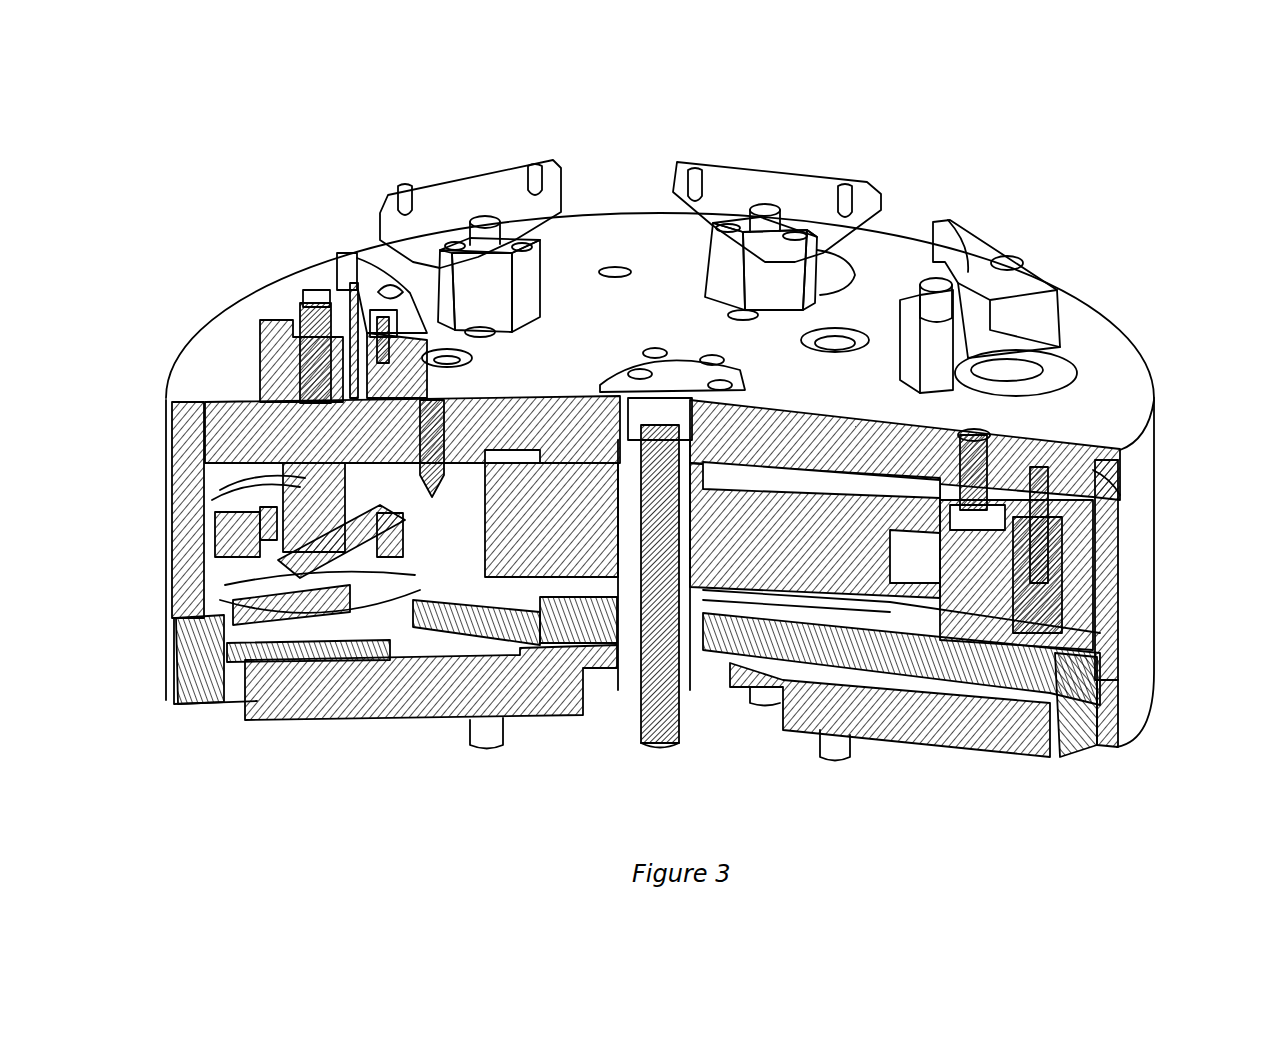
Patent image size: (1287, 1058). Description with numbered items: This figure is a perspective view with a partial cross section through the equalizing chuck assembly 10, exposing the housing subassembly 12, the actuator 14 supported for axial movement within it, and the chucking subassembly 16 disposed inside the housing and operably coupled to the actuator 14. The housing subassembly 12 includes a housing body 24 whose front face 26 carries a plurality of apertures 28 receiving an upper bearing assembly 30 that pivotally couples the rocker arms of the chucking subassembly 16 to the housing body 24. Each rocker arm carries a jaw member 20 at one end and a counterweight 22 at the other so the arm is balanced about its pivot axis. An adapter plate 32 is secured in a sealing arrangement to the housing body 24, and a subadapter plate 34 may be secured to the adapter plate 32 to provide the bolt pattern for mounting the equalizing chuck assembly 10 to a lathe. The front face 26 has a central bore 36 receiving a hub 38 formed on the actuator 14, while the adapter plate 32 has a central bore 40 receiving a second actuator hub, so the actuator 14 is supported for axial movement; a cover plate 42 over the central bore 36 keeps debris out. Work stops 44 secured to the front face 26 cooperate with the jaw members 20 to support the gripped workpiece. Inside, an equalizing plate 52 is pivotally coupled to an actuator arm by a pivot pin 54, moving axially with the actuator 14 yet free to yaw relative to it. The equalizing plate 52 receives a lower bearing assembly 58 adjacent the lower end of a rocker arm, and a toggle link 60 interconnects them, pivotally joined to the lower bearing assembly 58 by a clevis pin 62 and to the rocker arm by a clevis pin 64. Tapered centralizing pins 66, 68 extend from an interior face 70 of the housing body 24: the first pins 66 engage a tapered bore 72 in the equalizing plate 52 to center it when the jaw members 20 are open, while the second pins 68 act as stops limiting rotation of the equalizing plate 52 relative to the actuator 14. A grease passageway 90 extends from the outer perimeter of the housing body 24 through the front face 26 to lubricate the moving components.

The equalizing chuck assembly 10 is at (1138, 123).
The housing subassembly 12 is at (1113, 312).
The actuator 14 is at (890, 598).
The chucking subassembly 16 is at (430, 595).
The jaw member 20 is at (325, 262).
The counterweight 22 is at (235, 605).
The housing body 24 is at (1147, 462).
The front face 26 is at (648, 328).
The apertures 28 is at (270, 436).
The upper bearing assembly 30 is at (257, 400).
The adapter plate 32 is at (1147, 677).
The subadapter plate 34 is at (968, 742).
The central bore 36 is at (602, 378).
The hub 38 is at (722, 412).
The central bore 40 is at (642, 625).
The cover plate 42 is at (730, 378).
The work stops 44 is at (410, 330).
The equalizing plate 52 is at (215, 555).
The pivot pin 54 is at (1063, 583).
The lower bearing assembly 58 is at (232, 530).
The toggle link 60 is at (345, 562).
The clevis pin 62 is at (375, 522).
The clevis pin 64 is at (350, 612).
The tapered centralizing pins 66 is at (1012, 492).
The tapered centralizing pins 68 is at (450, 505).
The interior face 70 is at (902, 472).
The tapered bore 72 is at (1007, 583).
The grease passageway 90 is at (1083, 472).